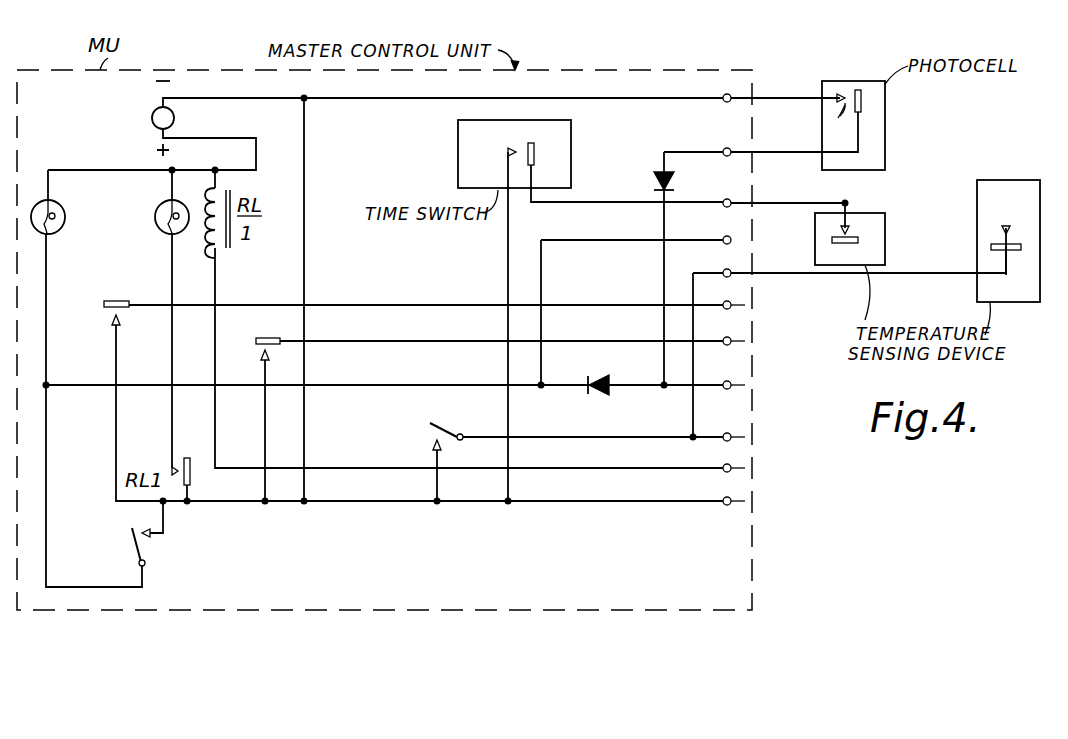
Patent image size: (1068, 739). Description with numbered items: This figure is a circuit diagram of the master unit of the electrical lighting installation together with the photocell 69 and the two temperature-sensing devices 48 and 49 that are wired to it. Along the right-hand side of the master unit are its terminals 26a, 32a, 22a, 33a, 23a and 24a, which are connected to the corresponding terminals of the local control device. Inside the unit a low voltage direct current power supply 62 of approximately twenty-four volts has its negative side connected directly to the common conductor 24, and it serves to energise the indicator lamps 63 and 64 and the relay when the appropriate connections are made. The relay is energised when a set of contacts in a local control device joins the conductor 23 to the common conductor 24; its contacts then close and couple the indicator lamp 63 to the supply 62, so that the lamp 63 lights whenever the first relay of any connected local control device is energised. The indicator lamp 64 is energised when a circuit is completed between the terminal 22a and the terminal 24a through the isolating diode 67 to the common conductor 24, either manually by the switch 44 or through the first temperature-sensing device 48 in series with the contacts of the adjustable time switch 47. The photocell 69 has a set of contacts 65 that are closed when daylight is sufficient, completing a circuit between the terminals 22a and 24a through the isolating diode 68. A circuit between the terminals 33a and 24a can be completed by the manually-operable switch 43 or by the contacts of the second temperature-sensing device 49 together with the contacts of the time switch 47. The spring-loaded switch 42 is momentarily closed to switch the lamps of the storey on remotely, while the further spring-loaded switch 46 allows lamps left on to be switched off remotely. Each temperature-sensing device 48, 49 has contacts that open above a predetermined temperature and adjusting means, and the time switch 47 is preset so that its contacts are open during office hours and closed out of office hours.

The low voltage direct current power supply 62 is at (152, 118).
The indicator lamp 63 is at (155, 217).
The indicator lamp 64 is at (66, 222).
The contacts of the photocell 65 is at (838, 125).
The isolating diode 67 is at (605, 392).
The isolating diode 68 is at (651, 177).
The photocell 69 is at (885, 117).
The adjustable time switch 47 is at (458, 164).
The first temperature-sensing device 48 is at (887, 238).
The second temperature-sensing device 49 is at (977, 290).
The manually-operable, normally-open, spring-loaded switch 46 is at (108, 312).
The manually-operable, normally-open, spring-loaded switch 42 is at (258, 350).
The manually-operable switch 43 is at (445, 430).
The manually-operable switch 44 is at (130, 552).
The terminal 22a is at (731, 385).
The terminal 23a is at (731, 468).
The terminal 24a is at (731, 501).
The terminal 26a is at (731, 305).
The terminal 32a is at (731, 341).
The terminal 33a is at (731, 437).
The conductor 23 is at (630, 470).
The common conductor 24 is at (630, 504).